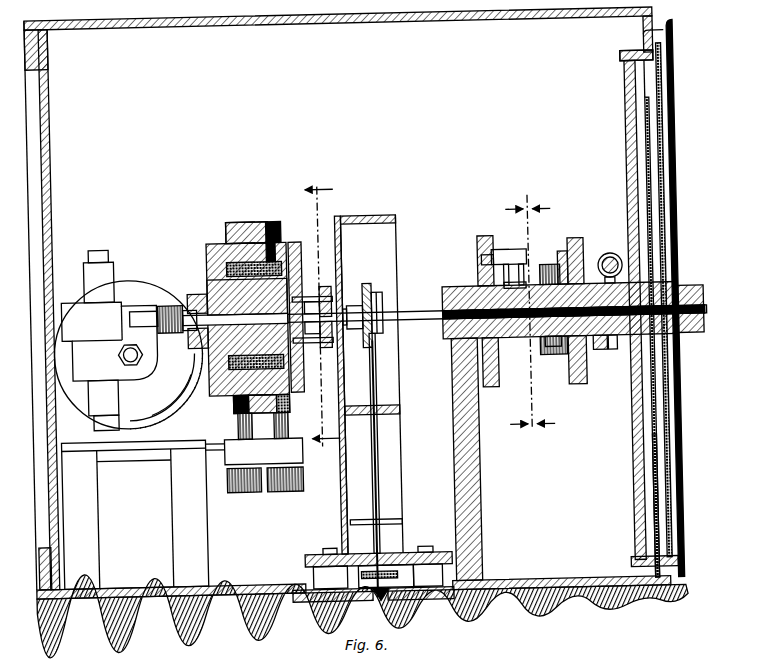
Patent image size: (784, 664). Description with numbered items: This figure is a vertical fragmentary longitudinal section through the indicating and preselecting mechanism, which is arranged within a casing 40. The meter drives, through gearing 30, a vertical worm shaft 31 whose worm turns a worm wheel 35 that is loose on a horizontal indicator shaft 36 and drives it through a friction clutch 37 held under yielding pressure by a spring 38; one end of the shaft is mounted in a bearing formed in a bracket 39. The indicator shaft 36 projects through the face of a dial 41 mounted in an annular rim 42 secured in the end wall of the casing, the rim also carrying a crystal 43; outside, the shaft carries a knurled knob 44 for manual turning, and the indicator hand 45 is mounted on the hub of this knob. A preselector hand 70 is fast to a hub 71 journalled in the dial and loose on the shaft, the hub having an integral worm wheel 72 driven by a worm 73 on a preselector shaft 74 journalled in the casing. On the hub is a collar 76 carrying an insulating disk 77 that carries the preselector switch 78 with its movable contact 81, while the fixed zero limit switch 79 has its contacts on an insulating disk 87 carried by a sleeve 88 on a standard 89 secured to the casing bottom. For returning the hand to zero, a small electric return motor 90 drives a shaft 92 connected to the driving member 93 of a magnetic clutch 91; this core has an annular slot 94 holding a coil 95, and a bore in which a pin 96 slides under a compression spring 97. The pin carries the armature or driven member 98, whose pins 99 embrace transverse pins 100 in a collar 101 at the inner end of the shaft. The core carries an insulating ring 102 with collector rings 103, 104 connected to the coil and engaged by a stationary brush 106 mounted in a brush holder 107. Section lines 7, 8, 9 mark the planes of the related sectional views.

The section line 7- 7 is at (322, 318).
The section line 8- 8 is at (543, 303).
The section line 9- 9 is at (518, 306).
The gearing 30 is at (392, 582).
The vertical worm shaft 31 is at (375, 440).
The worm wheel 35 is at (366, 348).
The indicator shaft 36 is at (405, 320).
The friction clutch 37 is at (388, 290).
The spring 38 is at (366, 288).
The bracket 39 is at (398, 390).
The casing 40 is at (341, 30).
The dial 41 is at (630, 90).
The annular rim 42 is at (628, 54).
The crystal 43 is at (678, 96).
The knurled knob 44 is at (702, 292).
The indicator hand 45 is at (655, 198).
The preselector hand 70 is at (652, 458).
The hub 71 is at (600, 346).
The worm wheel 72 is at (612, 352).
The worm 73 is at (609, 259).
The preselector shaft 74 is at (601, 262).
The collar 76 is at (583, 268).
The disk of insulating material 77 is at (580, 388).
The preselector switch 78 is at (548, 355).
The zero limit switch 79 is at (504, 248).
The movable contact 81 is at (553, 358).
The disk of insulating material 87 is at (484, 238).
The sleeve 88 is at (443, 303).
The bracket or standard 89 is at (477, 488).
The electric return motor 90 is at (134, 282).
The magnetic clutch 91 is at (255, 215).
The shaft 92 is at (192, 334).
The driving member 93 is at (208, 279).
The annular slot 94 is at (228, 266).
The coil 95 is at (228, 260).
The pin 96 is at (232, 405).
The compression spring 97 is at (232, 398).
The driven member 98 is at (299, 212).
The pins 99 is at (328, 285).
The transverse pins 100 is at (323, 298).
The collar 101 is at (302, 390).
The ring of insulating material 102 is at (248, 219).
The collector ring 103 is at (232, 221).
The collector ring 104 is at (275, 219).
The stationary brush 106 is at (254, 438).
The brush holder 107 is at (222, 466).